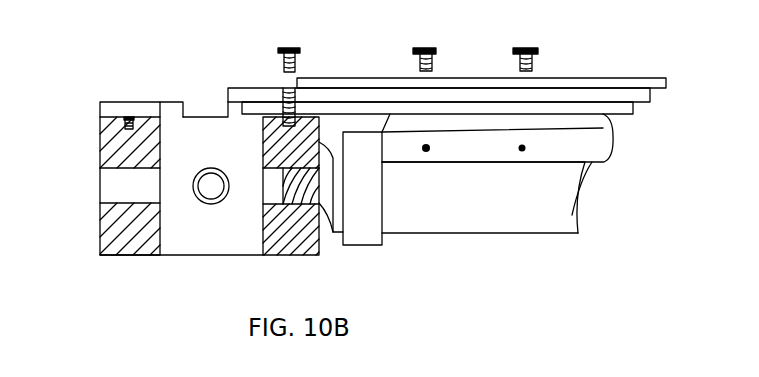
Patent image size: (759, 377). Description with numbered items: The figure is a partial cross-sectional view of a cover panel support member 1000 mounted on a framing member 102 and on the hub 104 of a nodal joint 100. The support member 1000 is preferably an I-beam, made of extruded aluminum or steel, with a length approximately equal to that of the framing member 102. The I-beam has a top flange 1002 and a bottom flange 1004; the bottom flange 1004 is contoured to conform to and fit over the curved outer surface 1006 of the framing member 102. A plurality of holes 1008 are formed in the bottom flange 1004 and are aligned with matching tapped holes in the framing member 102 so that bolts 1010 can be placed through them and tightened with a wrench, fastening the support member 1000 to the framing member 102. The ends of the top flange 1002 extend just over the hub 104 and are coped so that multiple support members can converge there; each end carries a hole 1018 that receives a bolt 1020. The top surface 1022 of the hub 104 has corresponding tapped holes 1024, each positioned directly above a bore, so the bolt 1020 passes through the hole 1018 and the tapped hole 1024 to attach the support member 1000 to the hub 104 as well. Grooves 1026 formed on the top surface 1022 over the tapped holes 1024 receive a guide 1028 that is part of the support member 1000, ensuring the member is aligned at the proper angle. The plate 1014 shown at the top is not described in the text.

The nodal joint 100 is at (66, 66).
The framing member 102 is at (503, 230).
The hub 104 is at (100, 143).
The cover panel support member 1000 is at (606, 122).
The top flange 1002 is at (650, 97).
The bottom flange 1004 is at (600, 156).
The outer surface 1006 is at (508, 210).
The holes 1008 is at (423, 150).
The bolts 1010 is at (423, 47).
The top plate 1014 is at (634, 88).
The hole 1018 is at (283, 92).
The bolt 1020 is at (292, 43).
The top surface 1022 is at (104, 101).
The tapped holes 1024 is at (140, 126).
The grooves 1026 is at (142, 110).
The guide 1028 is at (633, 113).